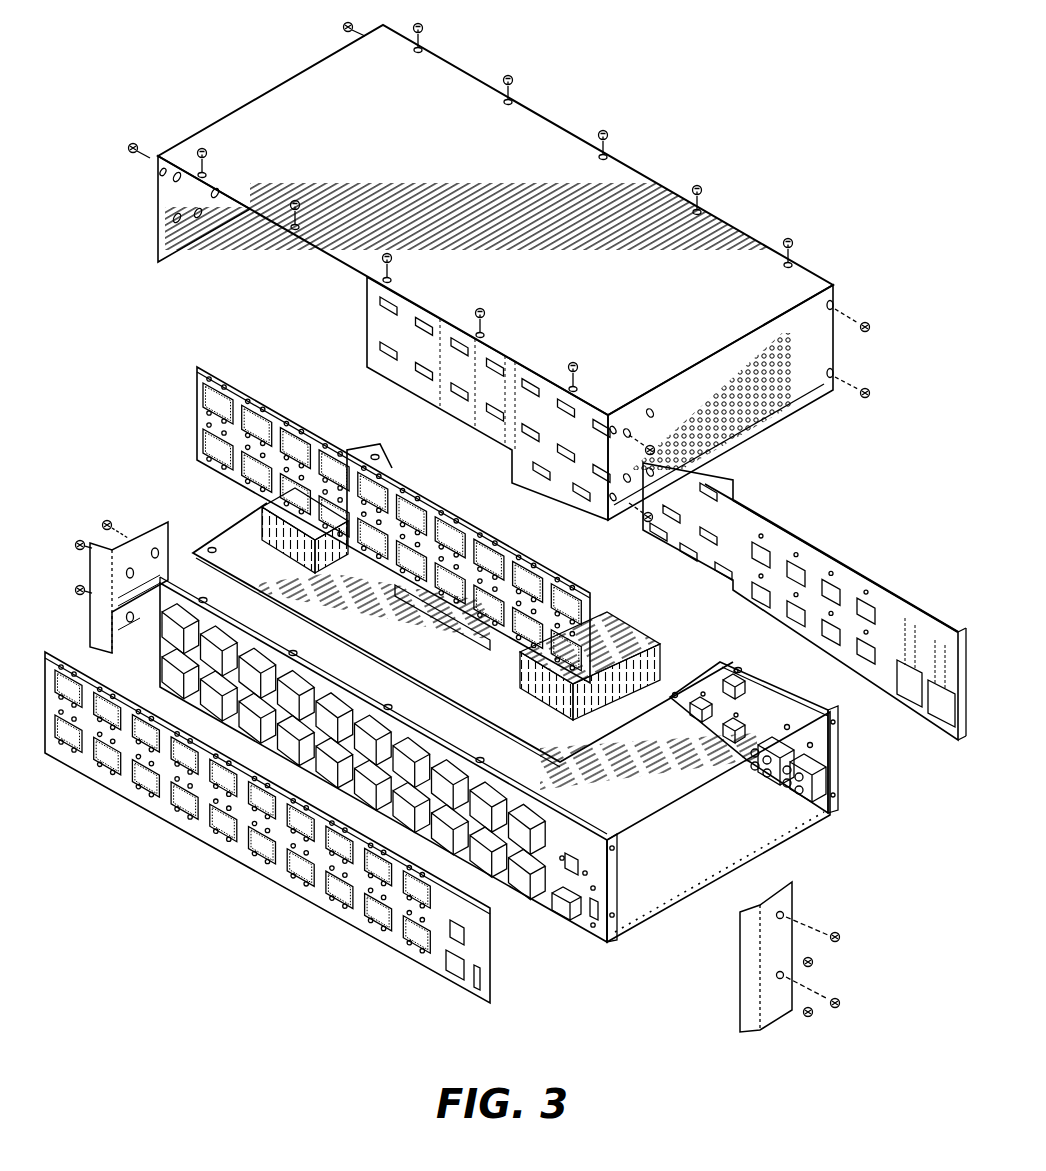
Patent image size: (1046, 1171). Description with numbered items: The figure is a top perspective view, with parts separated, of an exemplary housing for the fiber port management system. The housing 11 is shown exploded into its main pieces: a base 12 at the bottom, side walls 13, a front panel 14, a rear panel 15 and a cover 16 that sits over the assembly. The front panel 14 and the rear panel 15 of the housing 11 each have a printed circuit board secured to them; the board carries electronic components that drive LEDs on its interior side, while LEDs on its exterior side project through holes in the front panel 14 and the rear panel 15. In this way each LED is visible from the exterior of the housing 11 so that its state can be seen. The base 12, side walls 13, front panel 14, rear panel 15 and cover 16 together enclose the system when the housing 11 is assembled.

The housing 11 is at (893, 286).
The base 12 is at (795, 830).
The side walls 13 is at (158, 217).
The front panel 14 is at (577, 930).
The rear panel 15 is at (836, 742).
The cover 16 is at (640, 218).